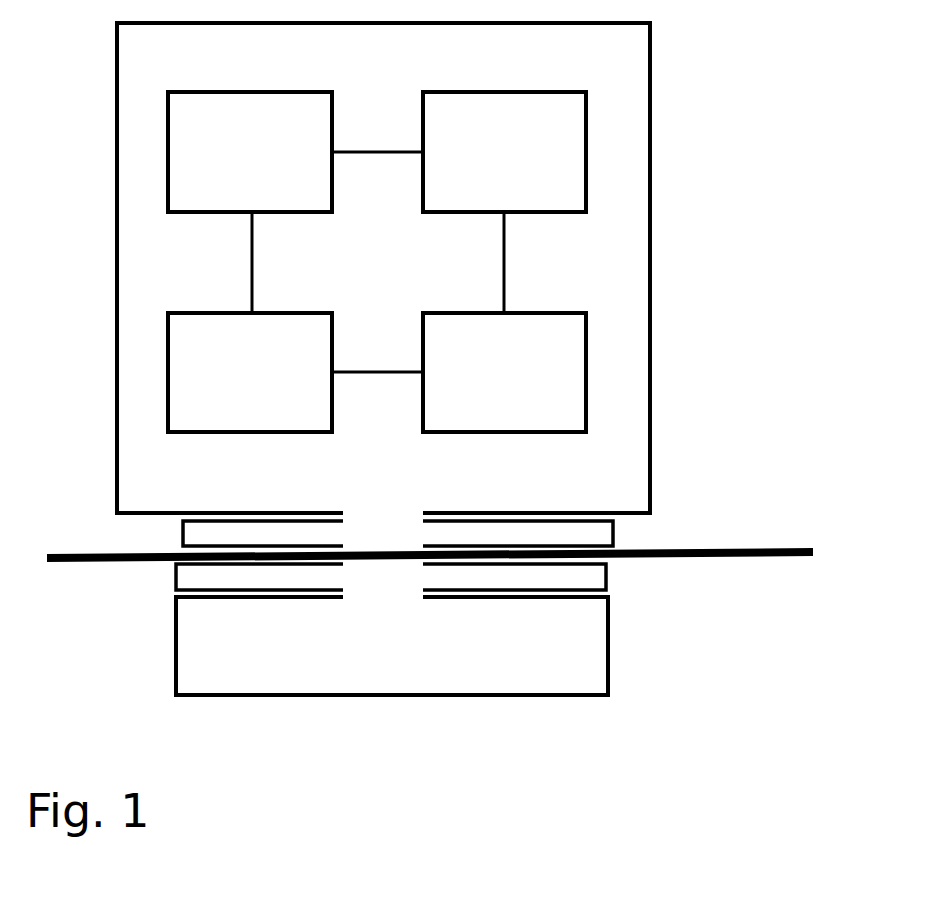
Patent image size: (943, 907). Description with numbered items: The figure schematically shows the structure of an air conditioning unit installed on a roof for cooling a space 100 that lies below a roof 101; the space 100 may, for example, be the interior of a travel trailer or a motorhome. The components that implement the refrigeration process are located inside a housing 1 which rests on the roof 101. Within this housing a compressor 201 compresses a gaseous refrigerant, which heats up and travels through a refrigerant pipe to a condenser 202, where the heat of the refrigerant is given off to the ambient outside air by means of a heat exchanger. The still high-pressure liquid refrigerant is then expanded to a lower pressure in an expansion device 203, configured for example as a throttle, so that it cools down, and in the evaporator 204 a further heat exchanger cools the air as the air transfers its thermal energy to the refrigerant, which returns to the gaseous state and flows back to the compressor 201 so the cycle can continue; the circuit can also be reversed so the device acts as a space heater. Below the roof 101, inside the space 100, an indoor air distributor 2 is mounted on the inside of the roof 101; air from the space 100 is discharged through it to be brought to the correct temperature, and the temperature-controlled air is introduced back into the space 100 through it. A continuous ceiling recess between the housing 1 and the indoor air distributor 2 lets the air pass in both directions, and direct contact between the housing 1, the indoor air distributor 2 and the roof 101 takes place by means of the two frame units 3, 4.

The housing 1 is at (649, 190).
The indoor air distributor 2 is at (398, 661).
The frame unit 3 is at (182, 533).
The frame unit 4 is at (175, 577).
The space 100 is at (720, 640).
The roof 101 is at (680, 547).
The compressor 201 is at (463, 390).
The condenser 202 is at (472, 173).
The expansion device 203 is at (222, 173).
The evaporator 204 is at (213, 394).